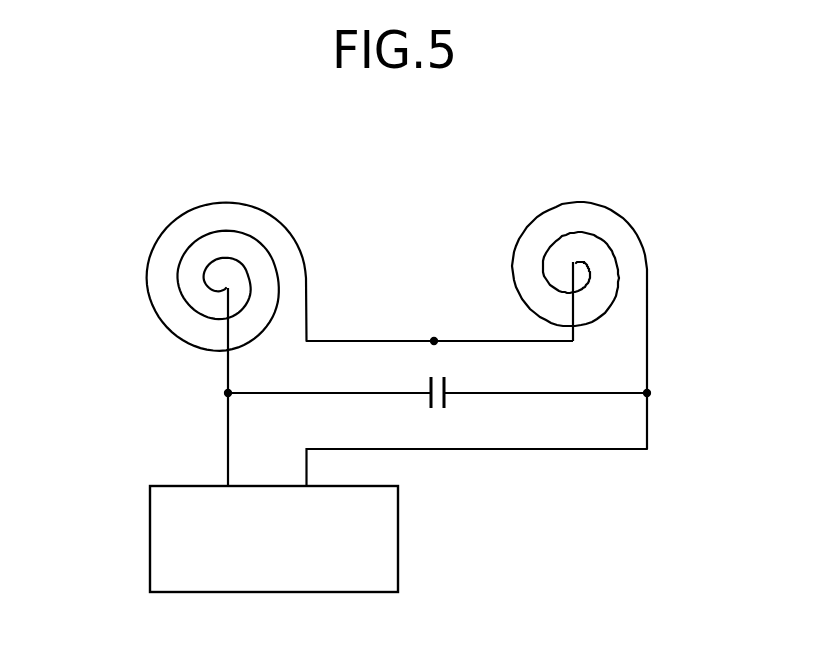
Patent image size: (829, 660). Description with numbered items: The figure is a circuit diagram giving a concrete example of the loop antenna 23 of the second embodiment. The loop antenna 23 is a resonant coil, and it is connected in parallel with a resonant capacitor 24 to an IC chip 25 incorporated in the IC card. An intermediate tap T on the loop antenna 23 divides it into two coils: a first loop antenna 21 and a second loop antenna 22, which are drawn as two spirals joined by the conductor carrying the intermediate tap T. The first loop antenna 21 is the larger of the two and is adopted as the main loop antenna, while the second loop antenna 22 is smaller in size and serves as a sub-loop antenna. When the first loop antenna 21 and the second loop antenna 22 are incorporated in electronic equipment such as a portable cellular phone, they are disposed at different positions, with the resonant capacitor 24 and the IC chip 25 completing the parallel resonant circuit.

The first loop antenna 21 is at (249, 204).
The second loop antenna 22 is at (590, 202).
The loop antenna 23 is at (491, 220).
The intermediate tap T is at (434, 341).
The resonant capacitor 24 is at (445, 401).
The IC chip 25 is at (398, 532).